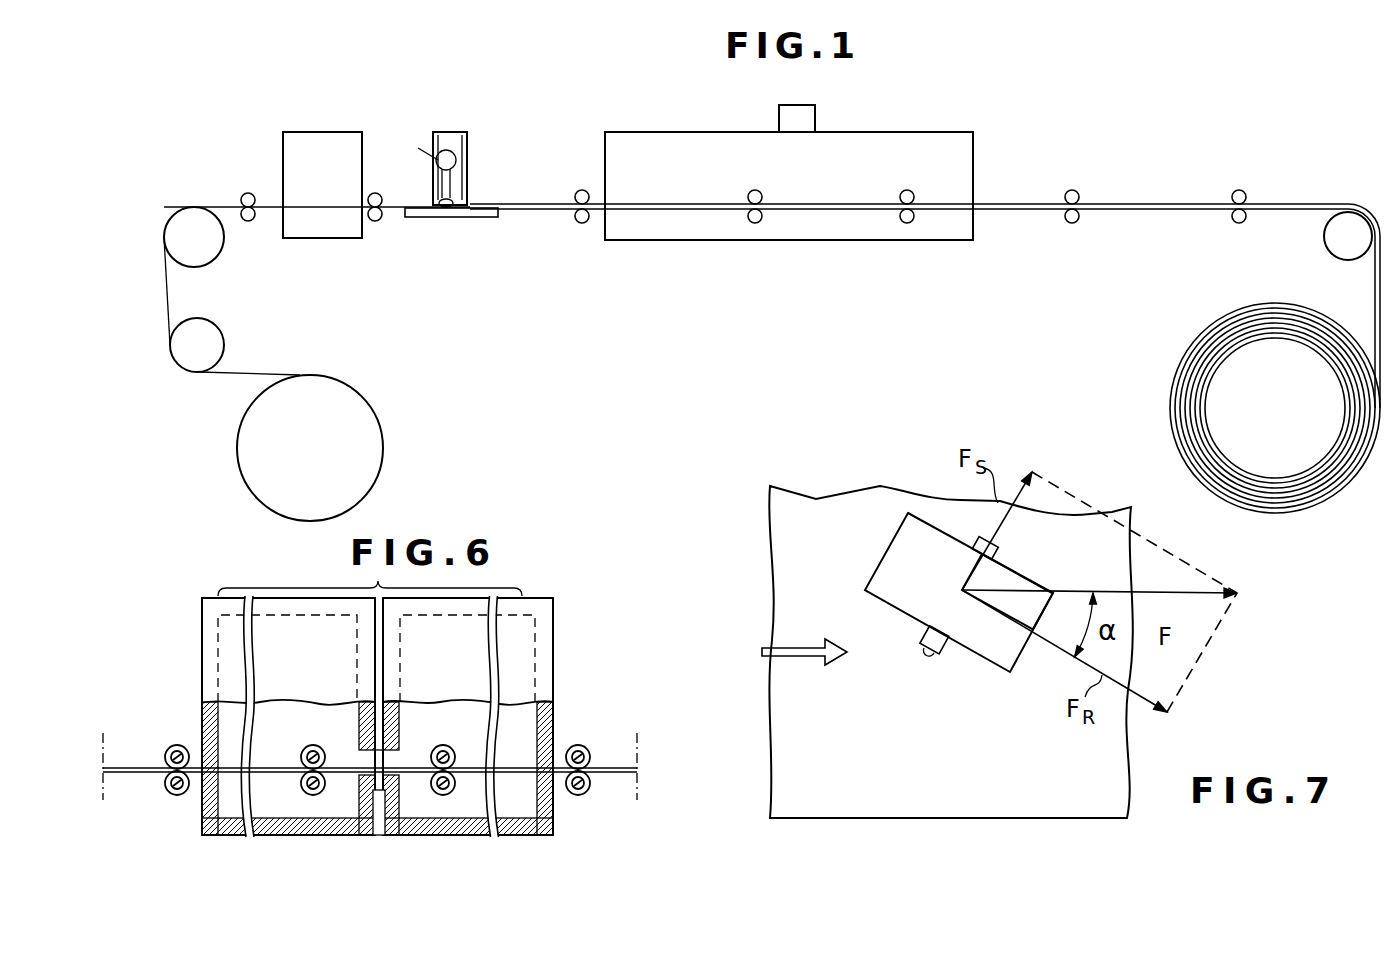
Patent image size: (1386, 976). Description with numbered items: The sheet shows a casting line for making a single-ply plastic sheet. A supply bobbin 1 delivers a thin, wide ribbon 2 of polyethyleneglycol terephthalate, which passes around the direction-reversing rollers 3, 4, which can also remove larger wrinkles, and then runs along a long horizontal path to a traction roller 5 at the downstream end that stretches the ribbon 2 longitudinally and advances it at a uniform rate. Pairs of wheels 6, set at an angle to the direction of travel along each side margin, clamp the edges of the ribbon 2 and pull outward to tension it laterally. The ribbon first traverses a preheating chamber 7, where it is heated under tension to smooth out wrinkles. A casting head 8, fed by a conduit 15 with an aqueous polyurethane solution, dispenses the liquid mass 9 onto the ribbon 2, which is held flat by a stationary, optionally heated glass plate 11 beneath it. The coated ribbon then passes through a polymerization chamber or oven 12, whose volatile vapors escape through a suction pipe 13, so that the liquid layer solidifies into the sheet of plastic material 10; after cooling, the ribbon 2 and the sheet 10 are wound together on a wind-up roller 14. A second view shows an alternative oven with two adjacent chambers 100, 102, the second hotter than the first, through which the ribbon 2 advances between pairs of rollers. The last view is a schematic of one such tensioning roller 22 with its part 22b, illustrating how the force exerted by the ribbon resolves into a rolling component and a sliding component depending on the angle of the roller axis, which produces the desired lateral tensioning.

In FIG. 1, the supply bobbin 1 is at (363, 432).
In FIG. 1, the ribbon 2 is at (270, 210).
In FIG. 6, the ribbon 2 is at (140, 766).
In FIG. 1, the direction-reversing roller 3 is at (215, 336).
In FIG. 1, the direction-reversing roller 4 is at (183, 216).
In FIG. 1, the traction roller 5 is at (1348, 210).
In FIG. 1, the pairs of wheels 6 is at (248, 193).
In FIG. 1, the preheating chamber 7 is at (318, 138).
In FIG. 1, the casting head 8 is at (450, 133).
In FIG. 1, the liquid mass 9 is at (448, 218).
In FIG. 1, the sheet of plastic material 10 is at (1006, 198).
In FIG. 1, the flat horizontal plate 11 is at (492, 222).
In FIG. 1, the polymerization chamber 12 is at (680, 142).
In FIG. 1, the suction pipe 13 is at (818, 118).
In FIG. 1, the wind-up roller 14 is at (1222, 375).
In FIG. 1, the conduit 15 is at (428, 150).
In FIG. 6, the guide roller 22 is at (311, 746).
In FIG. 7, the guide roller 22 is at (882, 572).
In FIG. 7, the roller support 22b is at (996, 652).
In FIG. 6, the first chamber 100 is at (232, 652).
In FIG. 6, the second chamber 102 is at (525, 652).